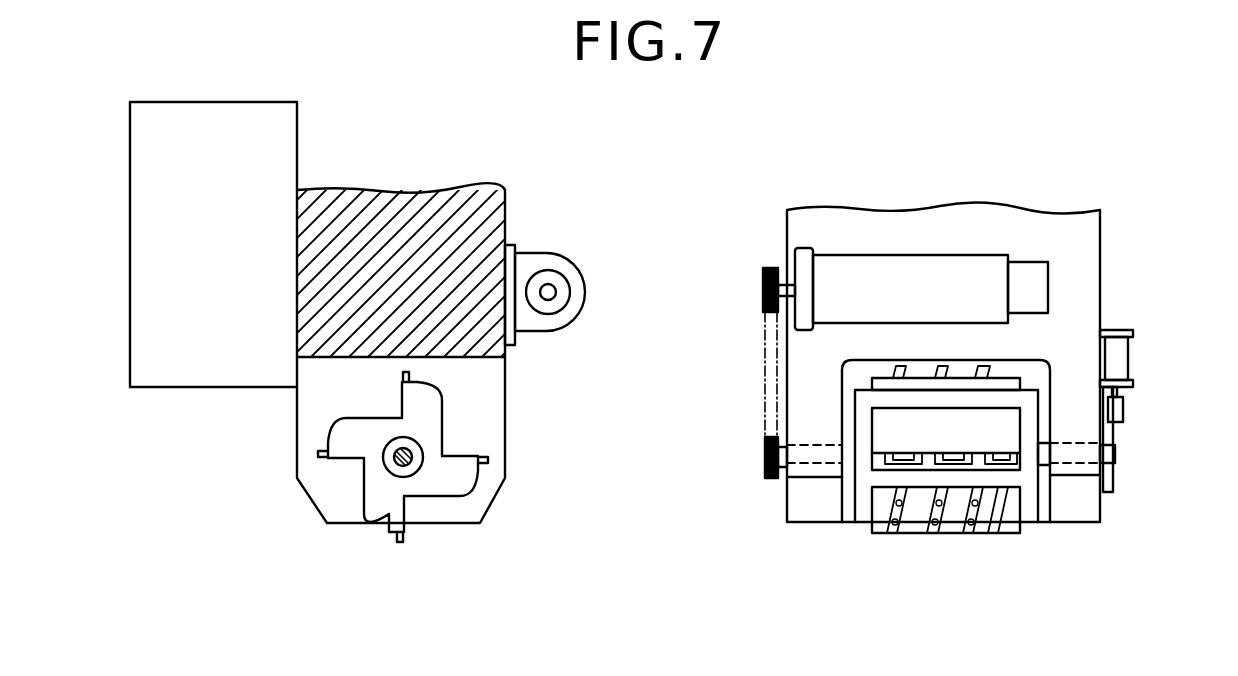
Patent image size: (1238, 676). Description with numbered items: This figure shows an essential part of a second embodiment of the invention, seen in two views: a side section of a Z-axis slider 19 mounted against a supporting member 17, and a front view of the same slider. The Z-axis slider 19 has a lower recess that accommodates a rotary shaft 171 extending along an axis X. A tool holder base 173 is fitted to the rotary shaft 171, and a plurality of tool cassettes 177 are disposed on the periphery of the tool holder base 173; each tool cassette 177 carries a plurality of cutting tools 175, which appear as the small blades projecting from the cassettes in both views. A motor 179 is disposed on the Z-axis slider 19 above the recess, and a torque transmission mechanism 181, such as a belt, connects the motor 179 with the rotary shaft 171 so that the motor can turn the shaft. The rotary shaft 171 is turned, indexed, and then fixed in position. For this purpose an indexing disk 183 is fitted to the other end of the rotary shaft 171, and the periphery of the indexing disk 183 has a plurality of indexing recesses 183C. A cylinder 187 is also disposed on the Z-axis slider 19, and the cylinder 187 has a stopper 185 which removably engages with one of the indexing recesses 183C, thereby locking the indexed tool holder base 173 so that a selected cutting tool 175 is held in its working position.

The base / support block 17 is at (280, 141).
The Z-axis slider 19 is at (497, 209).
The rotary shaft 171 is at (848, 467).
The tool holder base 173 is at (425, 490).
The cutting tool 175 is at (492, 460).
The tool cassette 177 is at (464, 460).
The motor 179 is at (575, 282).
The torque transmission mechanism 181 is at (755, 313).
The indexing disk 183 is at (1113, 470).
The indexing recess 183C is at (1108, 452).
The stopper 185 is at (1124, 408).
The cylinder 187 is at (1118, 357).